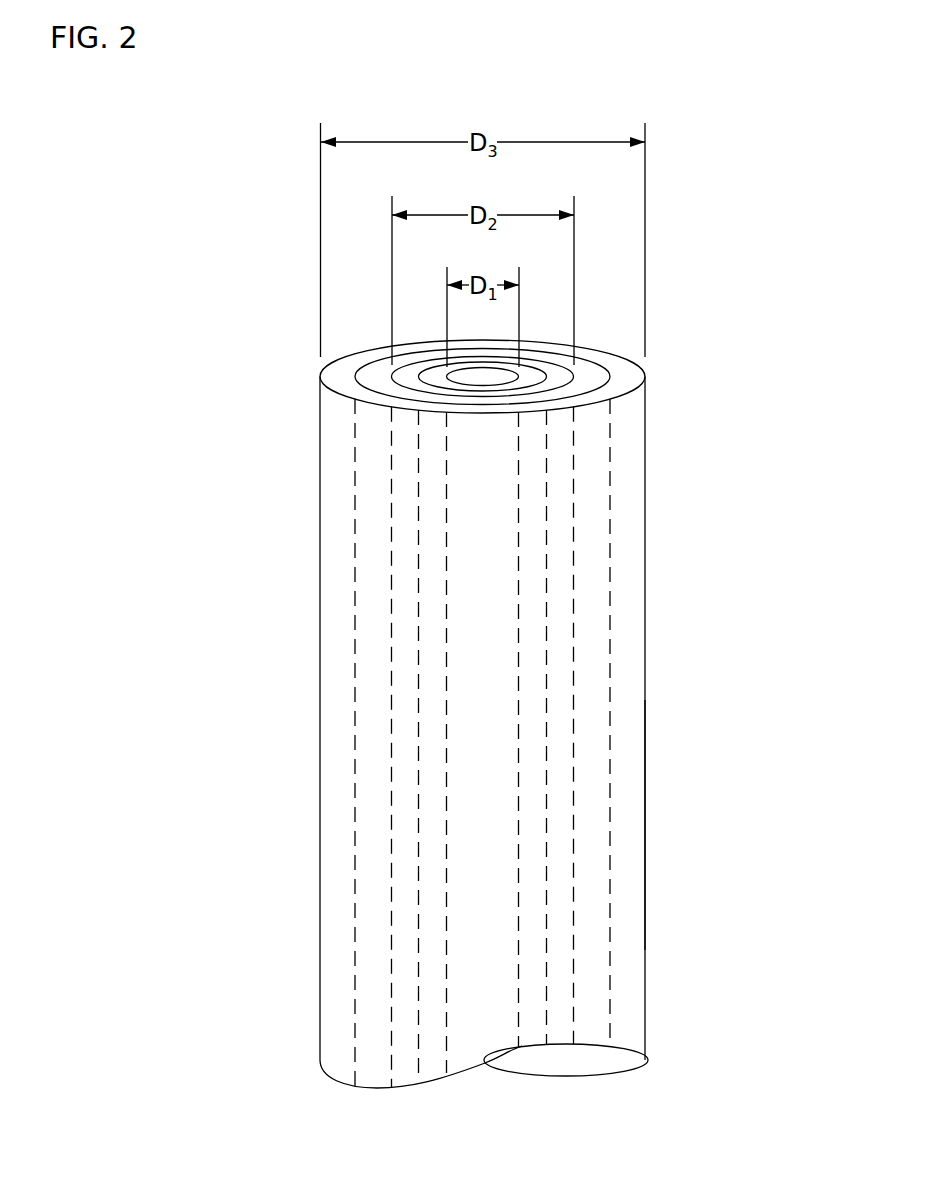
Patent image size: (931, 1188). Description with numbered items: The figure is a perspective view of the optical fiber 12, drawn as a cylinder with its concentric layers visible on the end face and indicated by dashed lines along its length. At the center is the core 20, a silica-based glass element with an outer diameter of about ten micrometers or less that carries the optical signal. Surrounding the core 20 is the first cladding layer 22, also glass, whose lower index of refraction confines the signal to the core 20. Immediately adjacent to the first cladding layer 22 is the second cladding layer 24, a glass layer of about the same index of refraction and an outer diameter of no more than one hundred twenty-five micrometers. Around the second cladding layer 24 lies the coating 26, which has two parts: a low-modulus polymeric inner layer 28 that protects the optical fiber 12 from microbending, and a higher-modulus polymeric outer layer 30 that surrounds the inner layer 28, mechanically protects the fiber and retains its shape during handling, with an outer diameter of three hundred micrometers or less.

The optical fiber 12 is at (265, 502).
The core 20 is at (520, 500).
The first cladding layer 22 is at (545, 637).
The second cladding layer 24 is at (393, 759).
The coating 26 is at (650, 852).
The inner layer 28 is at (612, 787).
The outer layer 30 is at (648, 978).